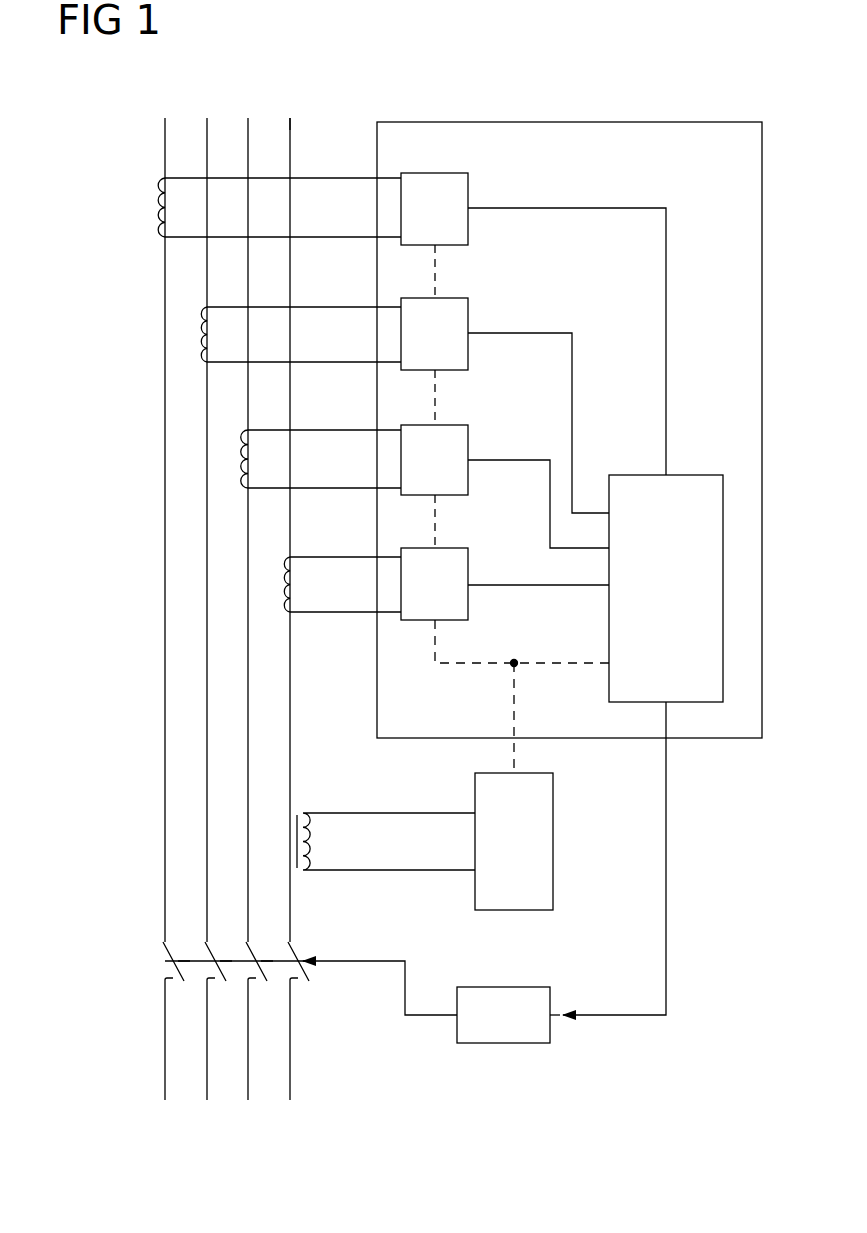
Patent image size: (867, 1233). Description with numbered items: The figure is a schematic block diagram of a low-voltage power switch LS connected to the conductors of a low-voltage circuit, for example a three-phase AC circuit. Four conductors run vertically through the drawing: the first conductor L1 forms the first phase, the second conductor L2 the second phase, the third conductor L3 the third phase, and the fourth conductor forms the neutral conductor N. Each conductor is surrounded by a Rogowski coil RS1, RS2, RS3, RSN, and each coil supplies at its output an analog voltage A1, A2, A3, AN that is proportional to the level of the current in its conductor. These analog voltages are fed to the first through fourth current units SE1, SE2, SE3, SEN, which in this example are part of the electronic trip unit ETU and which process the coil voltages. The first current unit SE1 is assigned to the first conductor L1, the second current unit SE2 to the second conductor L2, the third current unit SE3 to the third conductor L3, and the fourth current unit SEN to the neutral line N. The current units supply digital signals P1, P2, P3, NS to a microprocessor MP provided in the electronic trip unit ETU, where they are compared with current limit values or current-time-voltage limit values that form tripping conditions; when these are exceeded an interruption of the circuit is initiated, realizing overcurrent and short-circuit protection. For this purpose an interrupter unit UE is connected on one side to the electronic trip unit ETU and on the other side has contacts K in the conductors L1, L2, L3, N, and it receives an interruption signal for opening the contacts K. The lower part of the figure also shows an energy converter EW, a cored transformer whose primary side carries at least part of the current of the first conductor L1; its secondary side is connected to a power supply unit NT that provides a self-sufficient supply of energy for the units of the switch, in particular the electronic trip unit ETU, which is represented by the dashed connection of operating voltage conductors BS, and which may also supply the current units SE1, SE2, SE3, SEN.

The neutral conductor N is at (170, 613).
The third conductor L3 is at (208, 613).
The second conductor L2 is at (249, 613).
The first conductor L1 is at (291, 613).
The contacts K is at (124, 963).
The electronic trip unit ETU is at (569, 122).
The Rogowski coil RSN is at (162, 203).
The Rogowski coil RS3 is at (203, 326).
The Rogowski coil RS2 is at (243, 453).
The Rogowski coil RS1 is at (286, 577).
The analog voltage AN is at (333, 178).
The analog voltage A3 is at (333, 307).
The analog voltage A2 is at (333, 430).
The analog voltage A1 is at (333, 557).
The fourth current unit SEN is at (434, 209).
The third current unit SE3 is at (434, 334).
The second current unit SE2 is at (434, 460).
The first current unit SE1 is at (434, 584).
The digital signal NS is at (495, 208).
The digital signal P3 is at (498, 333).
The digital signal P2 is at (498, 460).
The digital signal P1 is at (498, 585).
The operating voltage conductors BS is at (563, 663).
The microprocessor MP is at (666, 588).
The power supply unit NT is at (553, 842).
The energy converter EW is at (304, 808).
The interrupter unit UE is at (502, 987).
The low-voltage power switch LS is at (566, 1062).